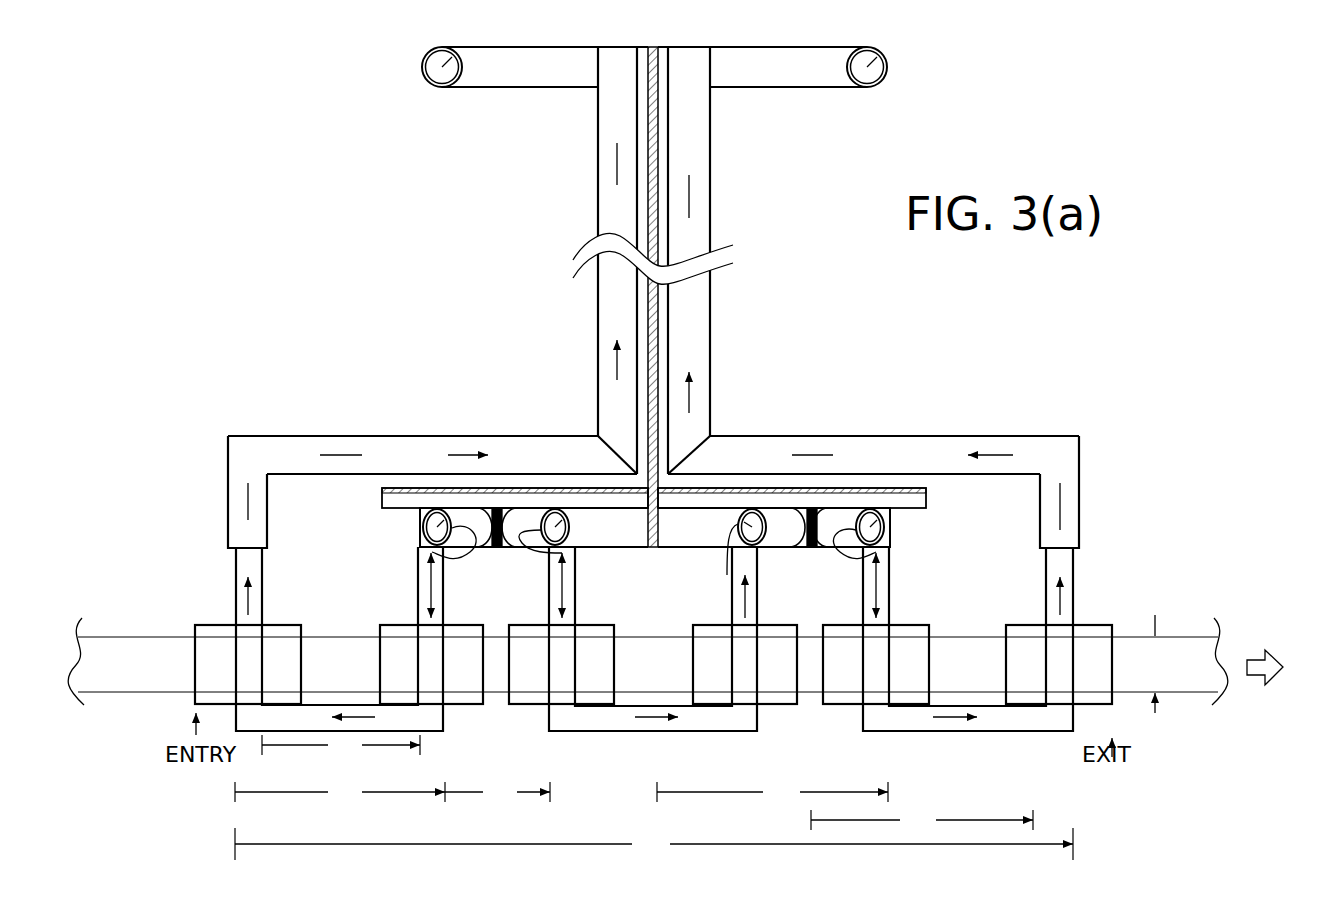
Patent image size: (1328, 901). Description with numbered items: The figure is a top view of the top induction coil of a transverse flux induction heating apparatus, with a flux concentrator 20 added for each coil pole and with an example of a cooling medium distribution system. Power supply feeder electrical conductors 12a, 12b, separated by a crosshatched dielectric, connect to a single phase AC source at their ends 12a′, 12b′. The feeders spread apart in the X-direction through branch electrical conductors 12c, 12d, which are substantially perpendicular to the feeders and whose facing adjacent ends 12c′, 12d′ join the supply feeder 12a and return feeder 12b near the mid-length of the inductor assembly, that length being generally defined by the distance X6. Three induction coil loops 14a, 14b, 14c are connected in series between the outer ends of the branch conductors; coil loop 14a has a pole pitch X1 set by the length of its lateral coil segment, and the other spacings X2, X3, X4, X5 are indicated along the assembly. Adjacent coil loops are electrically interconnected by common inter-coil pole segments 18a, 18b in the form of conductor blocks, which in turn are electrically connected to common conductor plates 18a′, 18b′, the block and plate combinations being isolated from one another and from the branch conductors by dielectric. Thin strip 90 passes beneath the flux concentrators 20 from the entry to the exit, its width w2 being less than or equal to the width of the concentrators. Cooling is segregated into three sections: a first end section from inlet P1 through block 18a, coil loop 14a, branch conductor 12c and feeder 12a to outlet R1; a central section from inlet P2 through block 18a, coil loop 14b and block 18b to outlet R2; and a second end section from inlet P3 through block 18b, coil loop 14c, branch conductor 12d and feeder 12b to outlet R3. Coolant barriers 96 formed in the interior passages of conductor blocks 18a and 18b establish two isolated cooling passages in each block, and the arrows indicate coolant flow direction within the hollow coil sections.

The power supply feeder electrical conductor 12a is at (601, 346).
The power return feeder electrical conductor 12b is at (710, 341).
The end of supply feeder conductor 12a′ is at (617, 42).
The end of return feeder conductor 12b′ is at (690, 42).
The supply branch electrical conductor 12c is at (398, 447).
The return branch electrical conductor 12d is at (915, 447).
The adjacent end of supply branch conductor 12c′ is at (611, 456).
The adjacent end of return branch conductor 12d′ is at (697, 455).
The common inter-coil pole segment 18a is at (635, 539).
The common inter-coil pole segment 18b is at (712, 539).
The common conductor plate 18a′ is at (384, 498).
The common conductor plate 18b′ is at (927, 498).
The coolant inlet P1 is at (422, 519).
The coolant inlet P2 is at (571, 522).
The coolant inlet P3 is at (888, 521).
The coolant outlet R1 is at (423, 75).
The coolant outlet R2 is at (724, 578).
The coolant outlet R3 is at (886, 54).
The coolant barrier 96 is at (810, 546).
The flux concentrator 20 is at (282, 633).
The thin strip 90 is at (143, 678).
The induction coil loop 14a is at (437, 739).
The induction coil loop 14b is at (706, 739).
The induction coil loop 14c is at (981, 740).
The pole pitch X1 is at (341, 749).
The distance X2 is at (340, 796).
The distance X3 is at (497, 796).
The distance X4 is at (772, 796).
The distance X5 is at (922, 824).
The length of inductor assembly X6 is at (654, 846).
The width of thin strip w2 is at (1161, 682).